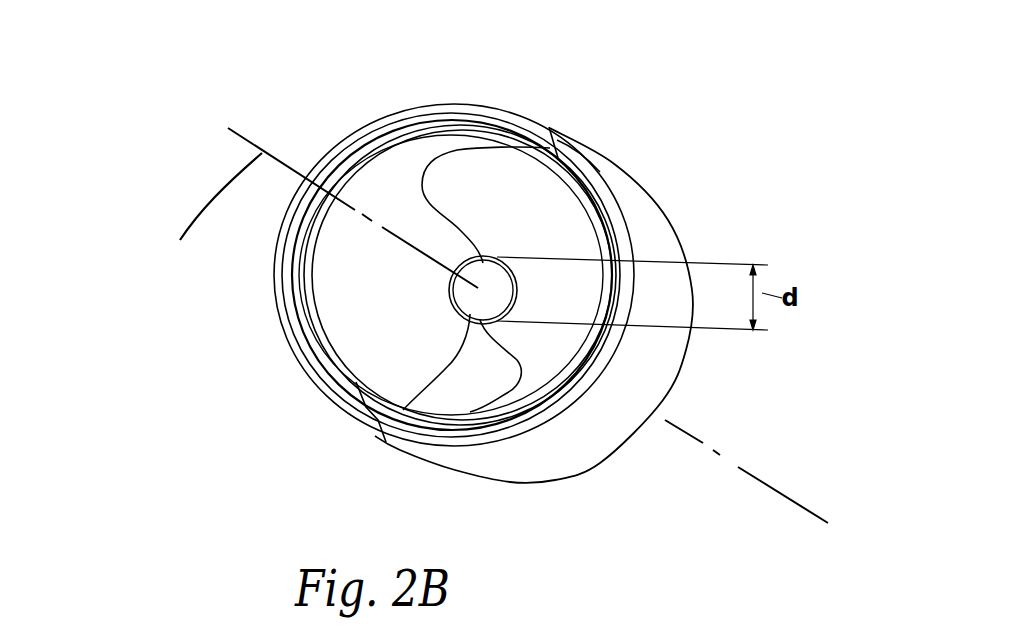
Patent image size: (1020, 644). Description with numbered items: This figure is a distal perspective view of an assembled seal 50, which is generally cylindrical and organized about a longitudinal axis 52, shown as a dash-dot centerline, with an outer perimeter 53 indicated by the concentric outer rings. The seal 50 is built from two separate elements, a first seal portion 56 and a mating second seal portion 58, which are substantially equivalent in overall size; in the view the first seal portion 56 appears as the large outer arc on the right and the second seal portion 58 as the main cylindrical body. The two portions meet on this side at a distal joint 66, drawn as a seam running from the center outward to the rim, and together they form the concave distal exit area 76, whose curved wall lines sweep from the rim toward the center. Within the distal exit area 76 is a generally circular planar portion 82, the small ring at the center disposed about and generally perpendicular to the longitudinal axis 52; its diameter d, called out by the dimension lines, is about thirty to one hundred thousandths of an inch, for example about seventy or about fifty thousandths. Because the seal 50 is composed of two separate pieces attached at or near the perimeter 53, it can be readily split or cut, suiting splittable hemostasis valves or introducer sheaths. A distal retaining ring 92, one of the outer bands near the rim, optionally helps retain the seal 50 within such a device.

The seal 50 is at (170, 116).
The longitudinal axis 52 is at (213, 216).
The perimeter 53 is at (488, 440).
The first seal portion 56 is at (626, 192).
The second seal portion 58 is at (281, 323).
The distal joint 66 is at (522, 378).
The distal exit area 76 is at (375, 345).
The planar portion 82 is at (387, 427).
The distal retaining ring 92 is at (351, 140).